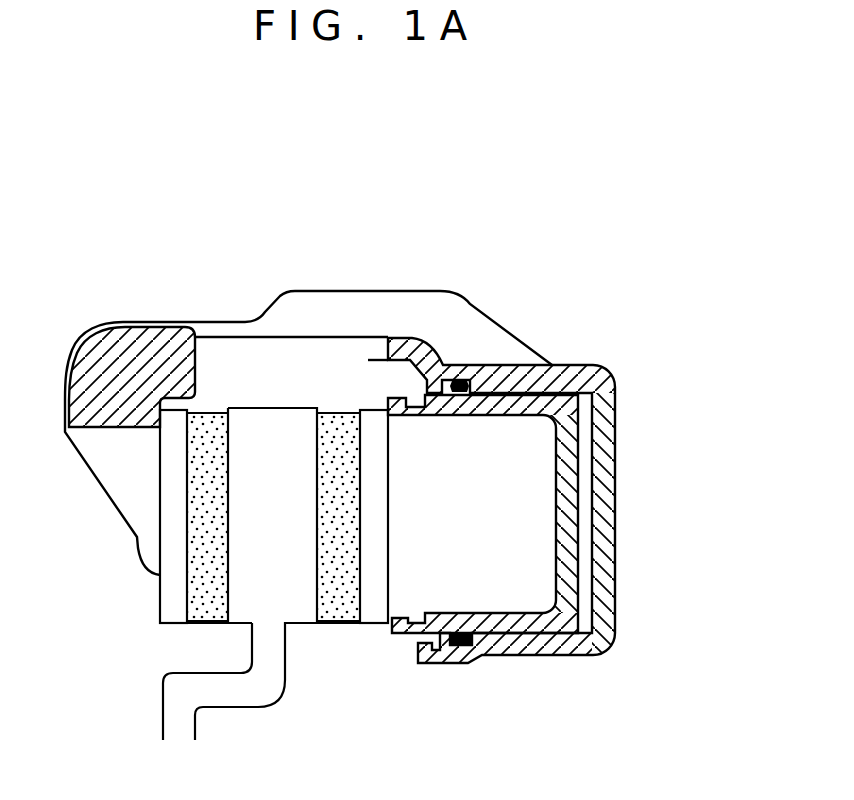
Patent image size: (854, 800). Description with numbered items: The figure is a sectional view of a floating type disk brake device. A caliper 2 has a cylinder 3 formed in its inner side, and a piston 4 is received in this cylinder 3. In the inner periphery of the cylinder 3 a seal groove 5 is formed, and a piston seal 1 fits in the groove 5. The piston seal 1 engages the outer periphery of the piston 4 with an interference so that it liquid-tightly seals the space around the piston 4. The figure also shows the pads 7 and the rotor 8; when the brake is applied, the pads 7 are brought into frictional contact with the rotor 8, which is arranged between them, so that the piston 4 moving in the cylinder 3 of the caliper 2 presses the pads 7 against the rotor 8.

The piston seal 1 is at (457, 380).
The caliper 2 is at (550, 363).
The cylinder 3 is at (582, 601).
The piston 4 is at (538, 625).
The seal groove 5 is at (469, 645).
The pads 7 is at (341, 445).
The rotor 8 is at (265, 610).